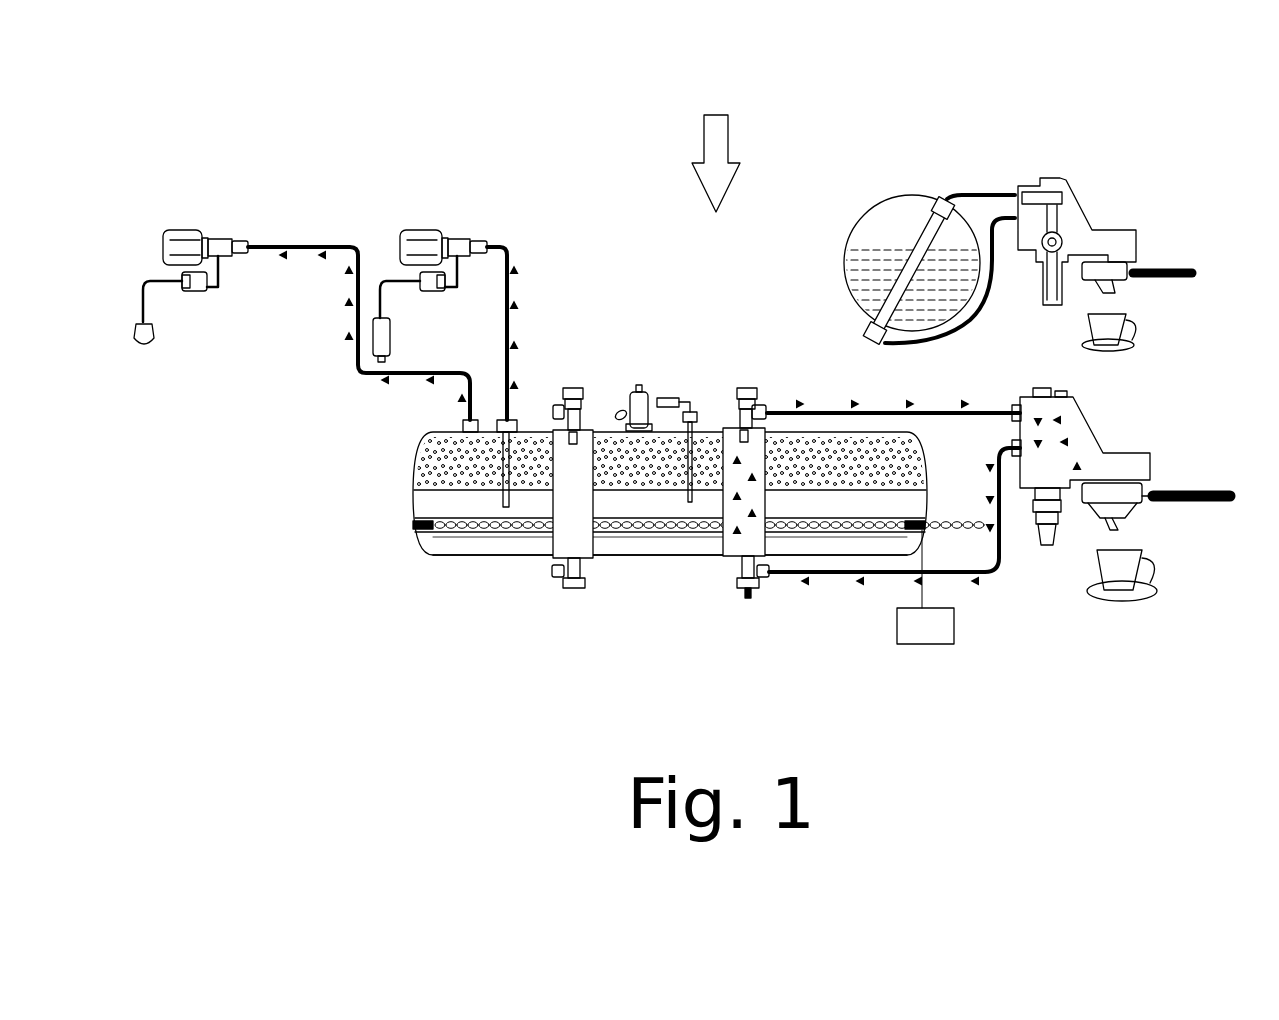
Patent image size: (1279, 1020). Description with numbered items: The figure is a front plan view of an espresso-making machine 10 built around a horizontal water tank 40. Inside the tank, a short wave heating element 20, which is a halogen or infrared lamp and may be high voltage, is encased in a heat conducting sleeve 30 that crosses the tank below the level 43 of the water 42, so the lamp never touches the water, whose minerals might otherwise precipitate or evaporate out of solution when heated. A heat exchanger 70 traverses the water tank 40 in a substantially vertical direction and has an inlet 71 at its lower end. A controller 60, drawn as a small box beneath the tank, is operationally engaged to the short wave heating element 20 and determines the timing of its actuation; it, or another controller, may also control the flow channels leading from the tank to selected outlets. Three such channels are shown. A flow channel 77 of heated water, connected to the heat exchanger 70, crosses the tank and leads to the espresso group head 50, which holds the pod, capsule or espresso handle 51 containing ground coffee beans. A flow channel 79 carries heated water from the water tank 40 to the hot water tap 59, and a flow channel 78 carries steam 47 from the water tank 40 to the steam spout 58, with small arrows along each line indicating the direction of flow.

The espresso-making machine 10 is at (716, 149).
The short wave heating element 20 is at (406, 531).
The heat conducting sleeve 30 is at (511, 537).
The water tank 40 is at (641, 562).
The water 42 is at (907, 499).
The level of the water 43 is at (411, 493).
The steam 47 is at (435, 464).
The espresso group head 50 is at (1095, 425).
The espresso handle 51 is at (1200, 506).
The steam spout 58 is at (191, 296).
The hot water tap 59 is at (431, 296).
The controller 60 is at (960, 626).
The heat exchanger 70 is at (721, 562).
The inlet 71 is at (752, 594).
The flow channel 77 is at (950, 424).
The flow channel 78 is at (351, 372).
The flow channel 79 is at (517, 331).